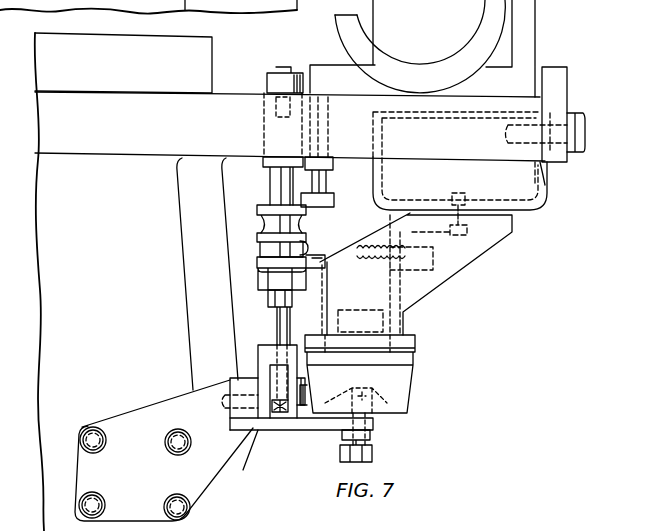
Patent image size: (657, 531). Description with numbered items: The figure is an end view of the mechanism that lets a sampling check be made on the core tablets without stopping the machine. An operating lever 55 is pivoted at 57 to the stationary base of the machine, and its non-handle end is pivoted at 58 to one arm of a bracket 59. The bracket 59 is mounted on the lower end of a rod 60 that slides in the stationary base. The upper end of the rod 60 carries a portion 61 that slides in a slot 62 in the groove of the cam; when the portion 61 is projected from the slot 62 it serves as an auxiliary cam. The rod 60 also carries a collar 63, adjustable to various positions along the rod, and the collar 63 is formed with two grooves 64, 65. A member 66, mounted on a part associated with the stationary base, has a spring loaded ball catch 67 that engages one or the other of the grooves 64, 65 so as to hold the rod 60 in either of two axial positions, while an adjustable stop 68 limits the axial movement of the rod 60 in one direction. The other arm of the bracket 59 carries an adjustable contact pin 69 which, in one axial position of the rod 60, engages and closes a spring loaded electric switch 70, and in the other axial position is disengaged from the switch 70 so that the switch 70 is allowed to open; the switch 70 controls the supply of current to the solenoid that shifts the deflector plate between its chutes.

The operating lever 55 is at (282, 412).
The pivot 57 is at (222, 419).
The pivot 58 is at (296, 410).
The bracket 59 is at (260, 356).
The rod 60 is at (278, 323).
The portion 61 is at (286, 68).
The slot 62 is at (275, 109).
The collar 63 is at (262, 205).
The groove 64 is at (305, 227).
The groove 65 is at (258, 253).
The member 66 is at (324, 266).
The spring loaded ball catch 67 is at (303, 250).
The adjustable stop 68 is at (333, 181).
The adjustable contact pin 69 is at (360, 443).
The spring loaded electric switch 70 is at (408, 389).